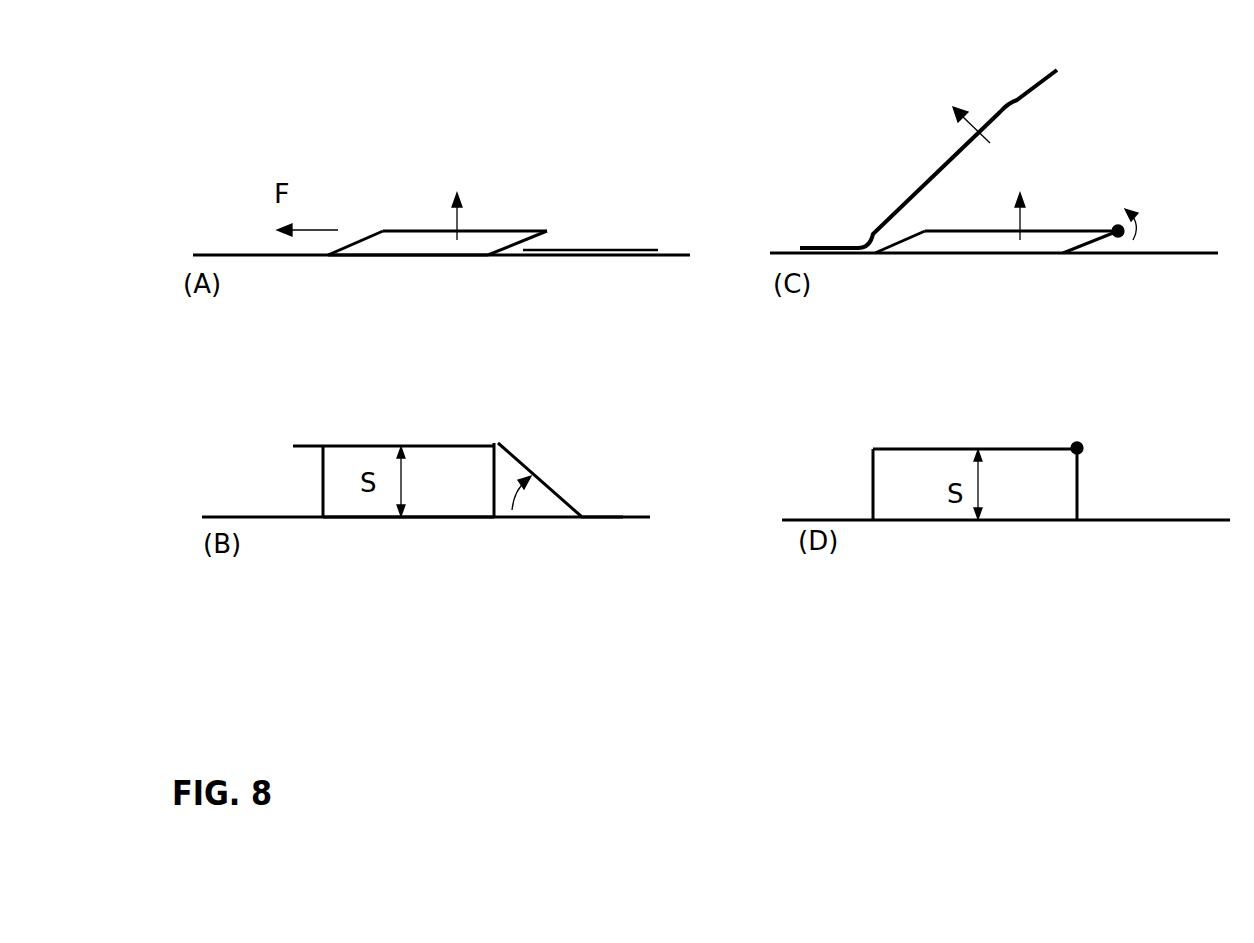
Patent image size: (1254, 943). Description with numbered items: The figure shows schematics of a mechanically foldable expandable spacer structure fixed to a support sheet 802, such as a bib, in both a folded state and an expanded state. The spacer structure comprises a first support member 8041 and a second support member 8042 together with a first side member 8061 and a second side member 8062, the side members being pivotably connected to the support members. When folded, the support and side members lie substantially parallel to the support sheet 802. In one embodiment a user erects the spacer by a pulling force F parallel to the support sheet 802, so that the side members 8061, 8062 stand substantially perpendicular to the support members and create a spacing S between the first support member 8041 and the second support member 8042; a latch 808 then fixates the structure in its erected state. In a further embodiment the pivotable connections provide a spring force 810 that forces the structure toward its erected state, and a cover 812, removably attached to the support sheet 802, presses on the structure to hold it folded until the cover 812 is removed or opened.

The support sheet 802 is at (218, 253).
The first support member 8041 is at (445, 263).
The second support member 8042 is at (440, 223).
The first side member 8061 is at (370, 258).
The second side member 8062 is at (517, 240).
The latch 808 is at (598, 242).
The spring force 810 is at (1143, 213).
The cover 812 is at (897, 185).